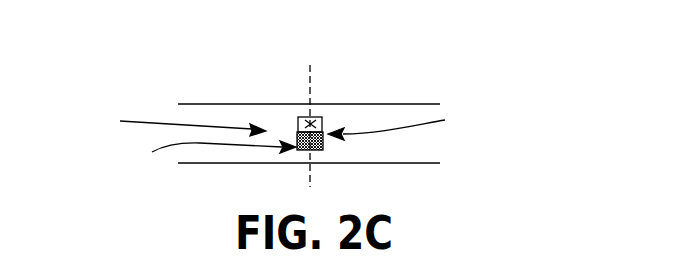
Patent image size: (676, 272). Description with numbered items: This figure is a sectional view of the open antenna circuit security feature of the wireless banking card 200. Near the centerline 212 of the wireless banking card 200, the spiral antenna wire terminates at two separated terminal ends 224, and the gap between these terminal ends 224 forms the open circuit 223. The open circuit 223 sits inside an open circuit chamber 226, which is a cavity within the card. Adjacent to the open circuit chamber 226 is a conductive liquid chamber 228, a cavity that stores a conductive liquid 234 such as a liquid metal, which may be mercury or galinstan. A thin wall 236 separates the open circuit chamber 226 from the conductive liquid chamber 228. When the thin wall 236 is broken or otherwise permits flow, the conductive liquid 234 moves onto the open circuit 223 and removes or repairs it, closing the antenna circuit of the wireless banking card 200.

The wireless banking card 200 is at (248, 103).
The centerline 212 is at (310, 75).
The open circuit 223 is at (172, 123).
The terminal ends 224 is at (313, 123).
The open circuit chamber 226 is at (302, 116).
The conductive liquid chamber 228 is at (213, 162).
The conductive liquid 234 is at (323, 144).
The thin wall 236 is at (407, 127).